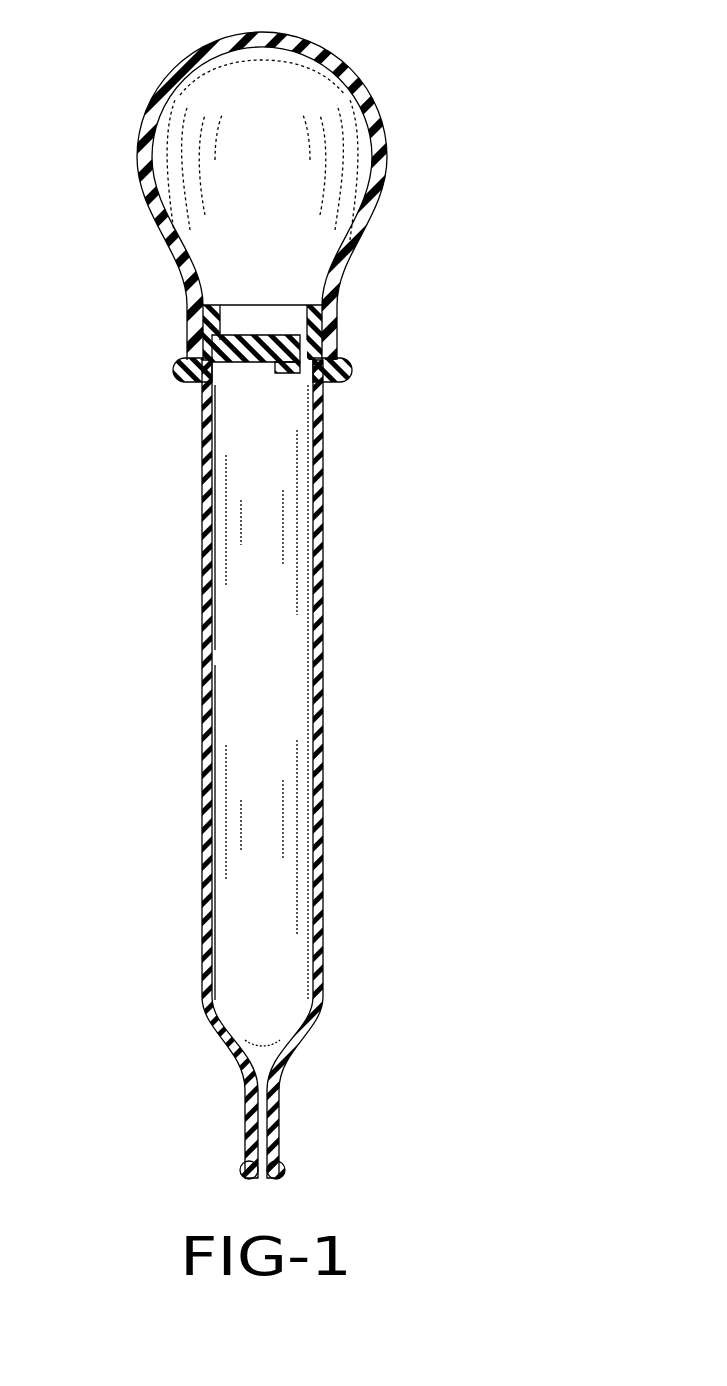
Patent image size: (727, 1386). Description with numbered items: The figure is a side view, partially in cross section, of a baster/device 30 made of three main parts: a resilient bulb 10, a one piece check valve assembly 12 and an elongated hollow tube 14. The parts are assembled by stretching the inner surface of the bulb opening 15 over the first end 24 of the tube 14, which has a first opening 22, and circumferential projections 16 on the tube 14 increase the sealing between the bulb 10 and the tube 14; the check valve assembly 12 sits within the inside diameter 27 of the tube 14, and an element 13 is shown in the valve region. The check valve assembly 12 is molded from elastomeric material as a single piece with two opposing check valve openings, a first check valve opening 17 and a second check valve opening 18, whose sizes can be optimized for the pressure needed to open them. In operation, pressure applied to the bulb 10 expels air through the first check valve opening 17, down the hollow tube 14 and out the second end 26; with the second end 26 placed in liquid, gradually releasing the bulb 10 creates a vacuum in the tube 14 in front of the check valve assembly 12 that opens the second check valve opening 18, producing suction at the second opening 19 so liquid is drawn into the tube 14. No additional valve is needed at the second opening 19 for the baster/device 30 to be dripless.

The resilient bulb 10 is at (357, 93).
The check valve assembly 12 is at (306, 295).
The filter element 13 is at (322, 350).
The elongated hollow tube 14 is at (325, 678).
The bulb opening 15 is at (265, 283).
The circumferential projections 16 is at (201, 328).
The first check valve opening 17 is at (293, 373).
The second check valve opening 18 is at (196, 312).
The second opening 19 is at (260, 1190).
The first opening 22 is at (292, 265).
The first end 24 is at (408, 294).
The second end 26 is at (340, 1107).
The inside diameter 27 is at (212, 367).
The baster/device 30 is at (523, 625).